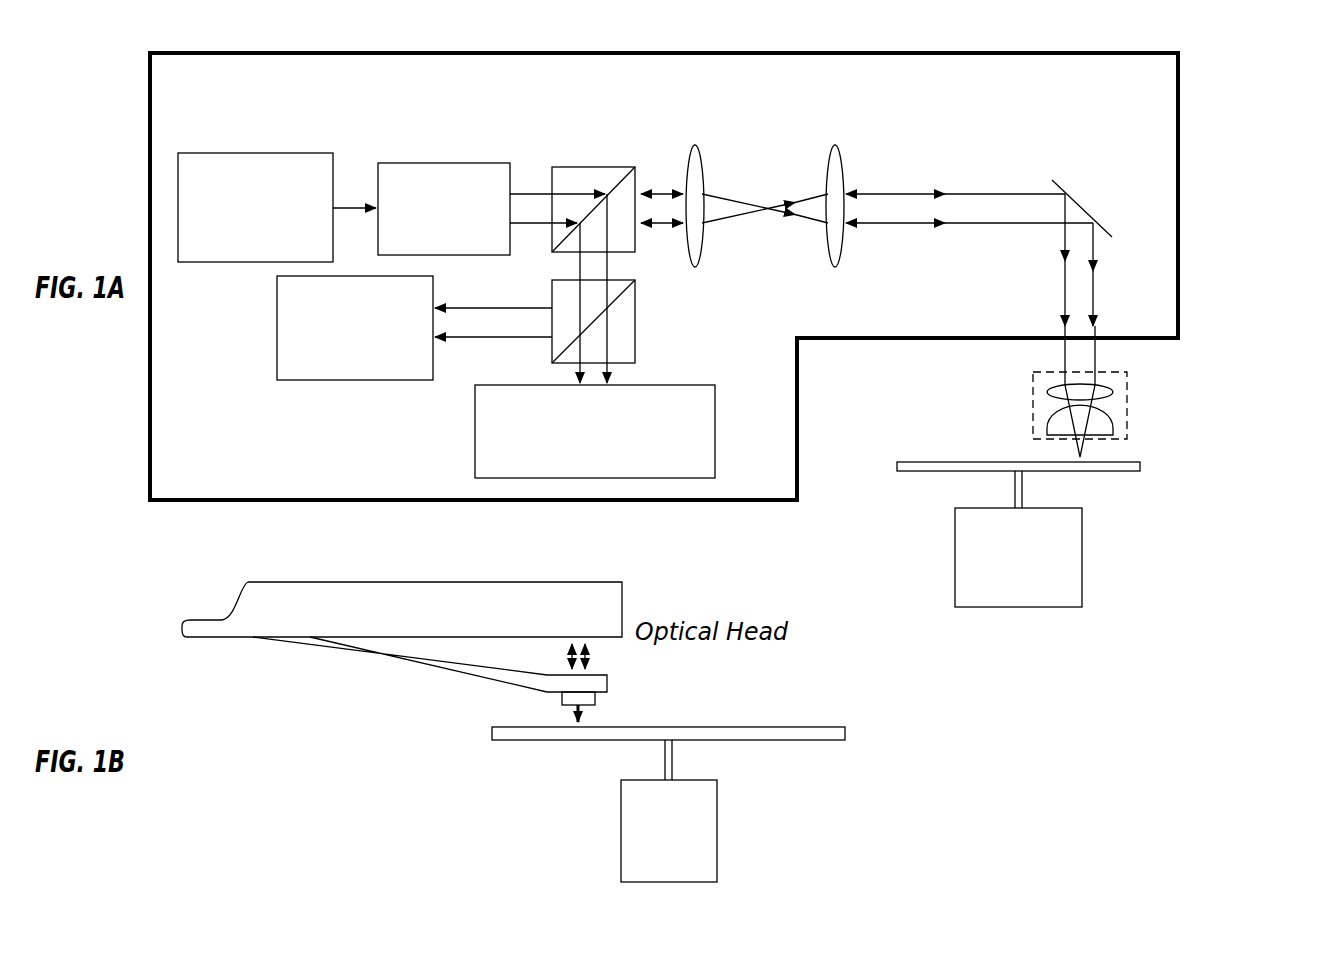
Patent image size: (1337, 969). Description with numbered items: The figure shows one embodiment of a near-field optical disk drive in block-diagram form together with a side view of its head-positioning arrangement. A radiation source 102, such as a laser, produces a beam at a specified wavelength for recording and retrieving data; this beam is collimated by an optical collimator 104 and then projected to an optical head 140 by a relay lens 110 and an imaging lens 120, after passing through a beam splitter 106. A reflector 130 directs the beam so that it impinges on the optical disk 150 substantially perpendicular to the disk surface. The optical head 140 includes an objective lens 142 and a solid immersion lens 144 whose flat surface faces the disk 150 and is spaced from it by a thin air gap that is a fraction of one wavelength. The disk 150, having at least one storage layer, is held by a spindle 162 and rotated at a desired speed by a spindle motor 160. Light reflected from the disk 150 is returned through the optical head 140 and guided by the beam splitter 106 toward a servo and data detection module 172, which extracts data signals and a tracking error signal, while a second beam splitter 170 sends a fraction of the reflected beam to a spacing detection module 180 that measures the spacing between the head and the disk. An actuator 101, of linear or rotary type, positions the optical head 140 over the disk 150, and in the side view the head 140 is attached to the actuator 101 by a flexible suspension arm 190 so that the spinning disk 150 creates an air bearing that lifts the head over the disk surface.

In FIG. 1A, the actuator 101 is at (216, 52).
In FIG. 1B, the actuator 101 is at (424, 582).
In FIG. 1A, the radiation source 102 is at (268, 152).
In FIG. 1A, the optical collimator 104 is at (447, 163).
In FIG. 1A, the beam splitter 106 is at (596, 167).
In FIG. 1A, the relay lens 110 is at (697, 145).
In FIG. 1A, the imaging lens 120 is at (838, 145).
In FIG. 1A, the reflector 130 is at (1085, 207).
In FIG. 1A, the optical head 140 is at (1033, 395).
In FIG. 1B, the optical head 140 is at (597, 700).
In FIG. 1A, the objective lens 142 is at (1113, 392).
In FIG. 1A, the solid immersion lens 144 is at (1113, 430).
In FIG. 1A, the optical disk 150 is at (1140, 467).
In FIG. 1B, the optical disk 150 is at (547, 742).
In FIG. 1A, the spindle motor 160 is at (1082, 560).
In FIG. 1B, the spindle motor 160 is at (717, 838).
In FIG. 1A, the spindle 162 is at (1018, 462).
In FIG. 1B, the spindle 162 is at (674, 748).
In FIG. 1A, the beam splitter 170 is at (637, 333).
In FIG. 1A, the servo and data detection module 172 is at (715, 430).
In FIG. 1A, the spacing detection module 180 is at (356, 381).
In FIG. 1B, the flexible suspension arm 190 is at (440, 668).